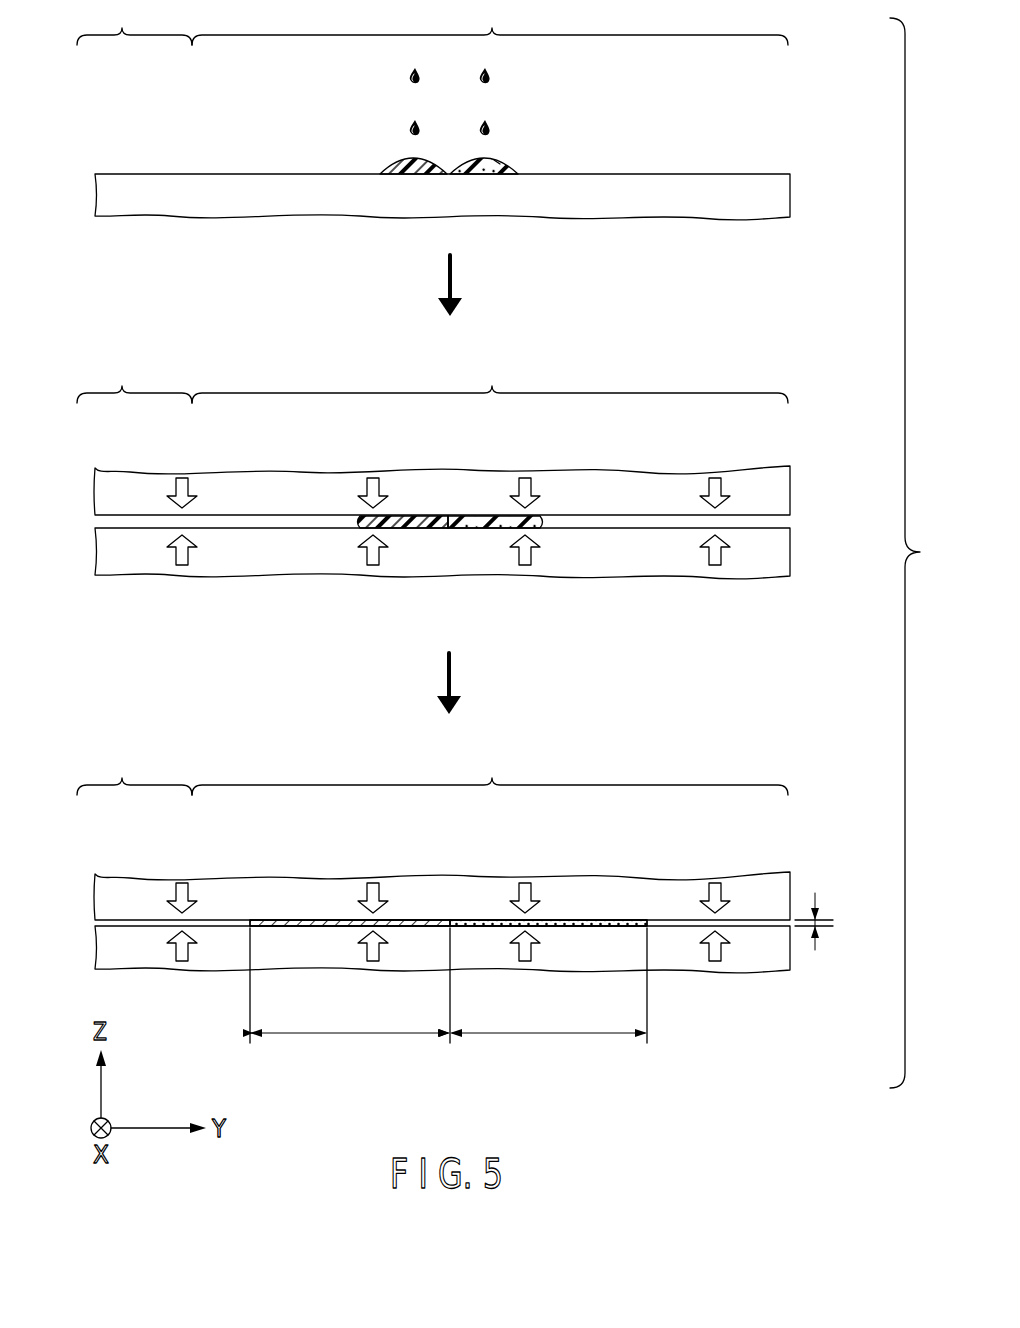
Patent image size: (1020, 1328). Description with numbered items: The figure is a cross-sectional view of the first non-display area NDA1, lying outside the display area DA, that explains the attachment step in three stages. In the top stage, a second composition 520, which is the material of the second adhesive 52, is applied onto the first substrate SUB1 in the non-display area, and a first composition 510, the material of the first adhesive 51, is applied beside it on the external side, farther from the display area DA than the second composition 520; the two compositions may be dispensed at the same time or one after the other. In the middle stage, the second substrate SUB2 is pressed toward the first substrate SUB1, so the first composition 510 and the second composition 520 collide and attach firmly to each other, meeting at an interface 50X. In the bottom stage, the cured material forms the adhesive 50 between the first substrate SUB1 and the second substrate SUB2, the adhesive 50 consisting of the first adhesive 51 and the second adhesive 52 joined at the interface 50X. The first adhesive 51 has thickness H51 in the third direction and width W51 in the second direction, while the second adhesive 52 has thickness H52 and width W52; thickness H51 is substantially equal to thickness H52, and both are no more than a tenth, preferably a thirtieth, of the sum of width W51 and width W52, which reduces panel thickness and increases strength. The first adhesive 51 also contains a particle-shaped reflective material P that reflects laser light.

The display area DA is at (134, 397).
The first non-display area NDA1 is at (490, 397).
The first substrate SUB1 is at (115, 196).
The second substrate SUB2 is at (115, 494).
The first composition 510 is at (488, 162).
The second composition 520 is at (402, 165).
The reflective material P is at (496, 160).
The interface 50X is at (447, 529).
The adhesive 50 is at (460, 900).
The first adhesive 51 is at (557, 919).
The second adhesive 52 is at (305, 919).
The width of first adhesive W51 is at (548, 985).
The width of second adhesive W52 is at (350, 985).
The thickness of first adhesive H51 is at (832, 923).
The thickness of second adhesive H52 is at (814, 921).